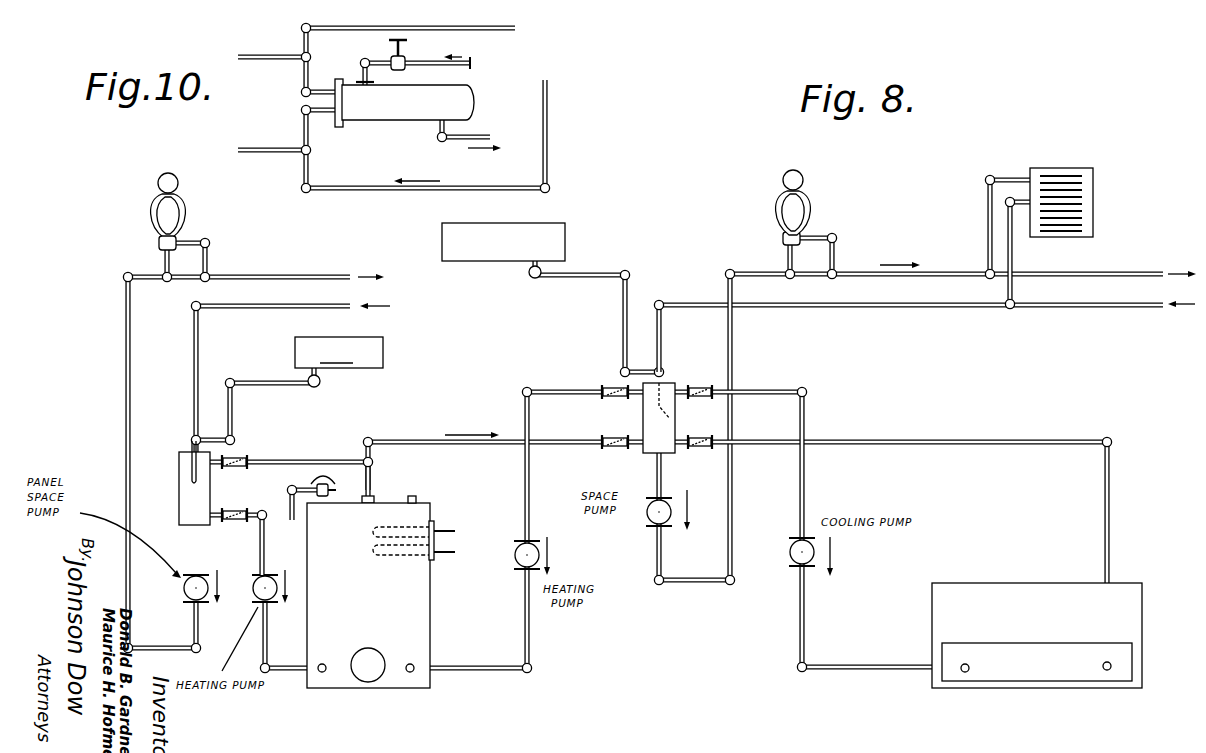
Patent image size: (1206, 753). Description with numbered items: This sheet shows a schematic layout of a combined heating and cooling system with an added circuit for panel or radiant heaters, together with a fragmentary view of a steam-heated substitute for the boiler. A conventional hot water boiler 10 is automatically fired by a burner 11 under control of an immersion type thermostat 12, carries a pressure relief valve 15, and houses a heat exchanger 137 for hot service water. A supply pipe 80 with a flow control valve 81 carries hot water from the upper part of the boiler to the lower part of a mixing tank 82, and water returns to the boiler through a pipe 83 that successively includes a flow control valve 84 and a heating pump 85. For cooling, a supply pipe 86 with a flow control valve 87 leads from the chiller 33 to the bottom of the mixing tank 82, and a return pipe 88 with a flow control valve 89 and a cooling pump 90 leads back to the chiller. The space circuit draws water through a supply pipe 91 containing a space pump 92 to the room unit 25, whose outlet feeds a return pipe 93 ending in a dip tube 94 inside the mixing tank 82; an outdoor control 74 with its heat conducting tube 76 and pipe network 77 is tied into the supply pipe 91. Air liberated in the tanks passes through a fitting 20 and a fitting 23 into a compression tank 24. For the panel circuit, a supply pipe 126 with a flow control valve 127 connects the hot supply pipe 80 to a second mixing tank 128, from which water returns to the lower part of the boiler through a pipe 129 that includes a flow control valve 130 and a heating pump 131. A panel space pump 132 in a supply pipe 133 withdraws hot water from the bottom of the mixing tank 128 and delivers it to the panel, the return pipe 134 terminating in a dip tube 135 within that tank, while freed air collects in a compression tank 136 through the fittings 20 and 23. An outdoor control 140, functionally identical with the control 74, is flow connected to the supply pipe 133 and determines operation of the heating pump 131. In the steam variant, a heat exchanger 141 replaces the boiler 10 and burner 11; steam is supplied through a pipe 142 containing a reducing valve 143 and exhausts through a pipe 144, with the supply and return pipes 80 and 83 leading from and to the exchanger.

In FIG. 8, the hot water boiler 10 is at (430, 595).
In FIG. 8, the burner 11 is at (360, 681).
In FIG. 8, the immersion type thermostat 12 is at (412, 476).
In FIG. 8, the pressure relief valve 15 is at (336, 491).
In FIG. 8, the fitting 20 is at (190, 440).
In FIG. 8, the fitting 23 is at (321, 383).
In FIG. 8, the compression tank 24 is at (566, 234).
In FIG. 8, the room unit 25 is at (1095, 187).
In FIG. 8, the chiller 33 is at (1004, 690).
In FIG. 8, the outdoor control 74 is at (808, 179).
In FIG. 8, the heat conducting tube 76 is at (783, 181).
In FIG. 8, the pipe network 77 is at (808, 233).
In FIG. 10, the supply pipe 80 is at (305, 76).
In FIG. 8, the supply pipe 80 is at (414, 441).
In FIG. 8, the flow control valve 81 is at (614, 449).
In FIG. 8, the mixing tank 82 is at (643, 418).
In FIG. 10, the return pipe 83 is at (365, 191).
In FIG. 8, the return pipe 83 is at (536, 390).
In FIG. 8, the flow control valve 84 is at (603, 388).
In FIG. 8, the heating pump 85 is at (515, 552).
In FIG. 8, the supply pipe 86 is at (1102, 505).
In FIG. 8, the flow control valve 87 is at (700, 449).
In FIG. 8, the return pipe 88 is at (806, 463).
In FIG. 8, the flow control valve 89 is at (691, 390).
In FIG. 8, the cooling pump 90 is at (790, 568).
In FIG. 8, the supply pipe 91 is at (695, 585).
In FIG. 8, the space pump 92 is at (648, 520).
In FIG. 8, the return pipe 93 is at (910, 308).
In FIG. 8, the dip tube 94 is at (672, 418).
In FIG. 10, the supply pipe 126 is at (272, 48).
In FIG. 8, the supply pipe 126 is at (332, 460).
In FIG. 8, the flow control valve 127 is at (246, 469).
In FIG. 8, the mixing tank 128 is at (179, 497).
In FIG. 10, the pipe 129 is at (262, 152).
In FIG. 8, the pipe 129 is at (261, 539).
In FIG. 8, the flow control valve 130 is at (235, 512).
In FIG. 8, the heating pump 131 is at (271, 575).
In FIG. 8, the panel space pump 132 is at (183, 590).
In FIG. 8, the supply pipe 133 is at (127, 405).
In FIG. 8, the pipe 134 is at (195, 349).
In FIG. 8, the dip tube 135 is at (191, 470).
In FIG. 8, the compression tank 136 is at (324, 343).
In FIG. 8, the heat exchanger 137 is at (444, 554).
In FIG. 8, the outdoor control 140 is at (183, 184).
In FIG. 10, the heat exchanger 141 is at (392, 121).
In FIG. 10, the pipe 142 is at (471, 64).
In FIG. 10, the reducing valve 143 is at (406, 53).
In FIG. 10, the pipe 144 is at (452, 142).